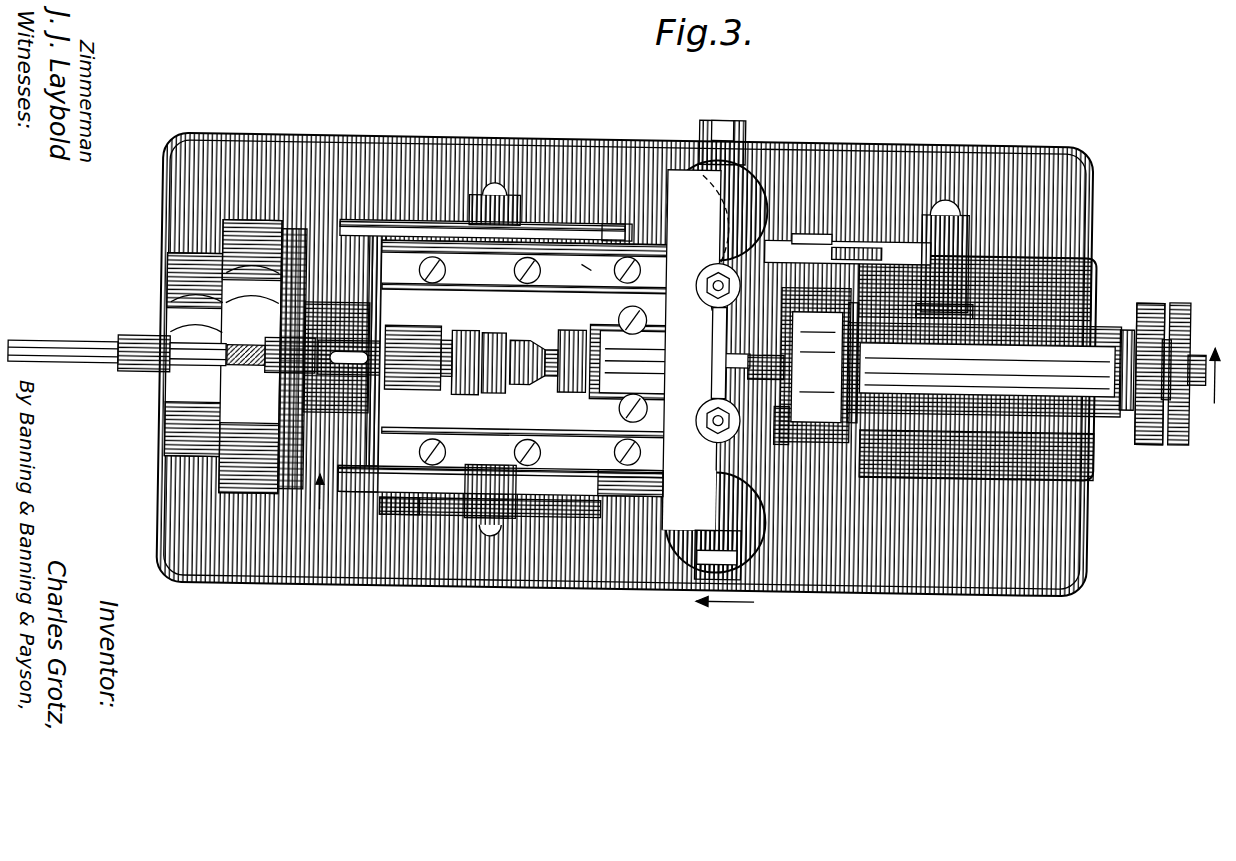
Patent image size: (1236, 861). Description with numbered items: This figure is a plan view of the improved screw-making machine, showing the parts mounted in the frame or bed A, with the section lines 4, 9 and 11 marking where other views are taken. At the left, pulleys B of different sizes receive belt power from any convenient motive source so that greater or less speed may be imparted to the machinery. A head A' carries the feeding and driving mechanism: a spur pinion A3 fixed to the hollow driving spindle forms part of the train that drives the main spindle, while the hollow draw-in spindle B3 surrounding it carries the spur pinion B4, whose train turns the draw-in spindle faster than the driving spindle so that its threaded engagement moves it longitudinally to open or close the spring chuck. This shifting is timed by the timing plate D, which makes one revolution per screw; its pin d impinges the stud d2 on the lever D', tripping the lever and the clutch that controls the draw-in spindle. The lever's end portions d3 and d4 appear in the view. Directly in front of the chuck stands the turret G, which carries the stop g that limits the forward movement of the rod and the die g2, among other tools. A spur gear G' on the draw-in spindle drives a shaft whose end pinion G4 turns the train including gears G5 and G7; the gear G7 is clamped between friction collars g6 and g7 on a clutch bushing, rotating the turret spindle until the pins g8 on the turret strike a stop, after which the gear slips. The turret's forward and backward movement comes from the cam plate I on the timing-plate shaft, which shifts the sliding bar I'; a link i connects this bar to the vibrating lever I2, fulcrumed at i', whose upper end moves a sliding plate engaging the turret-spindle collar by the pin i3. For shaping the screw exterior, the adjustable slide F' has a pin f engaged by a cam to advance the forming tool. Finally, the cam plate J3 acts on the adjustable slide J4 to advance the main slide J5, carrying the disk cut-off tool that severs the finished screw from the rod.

The frame or bed A is at (625, 335).
The pulleys B is at (190, 300).
The head A' is at (418, 357).
The spur pinion A3 is at (465, 322).
The hollow draw-in spindle B3 is at (530, 378).
The spur pinion B4 is at (494, 324).
The spur gear G' is at (570, 339).
The turret G is at (815, 365).
The die g2 is at (770, 350).
The pins g8 is at (860, 310).
The friction collar g6 is at (1127, 315).
The gear G7 is at (1150, 300).
The friction collar g7 is at (1180, 320).
The gear G5 is at (1178, 420).
The pinion G4 is at (1145, 400).
The cam plate I is at (483, 206).
The sliding bar I' is at (624, 211).
The vibrating lever I2 is at (895, 240).
The link i is at (812, 225).
The pivot or fulcrum i' is at (952, 253).
The pin i3 is at (576, 262).
The cam plate J3 is at (740, 190).
The adjustable slide J4 is at (742, 120).
The main slide J5 is at (707, 353).
The adjustable slide F' is at (739, 551).
The pin or stud f is at (745, 545).
The timing plate D is at (500, 514).
The lever D' is at (352, 503).
The pin d is at (430, 495).
The stud d2 is at (400, 495).
The block d3 is at (555, 495).
The bar end d4 is at (640, 490).
The stop g is at (790, 430).
The section line 4 is at (1220, 375).
The section line 9 is at (725, 616).
The section line 11 is at (308, 492).